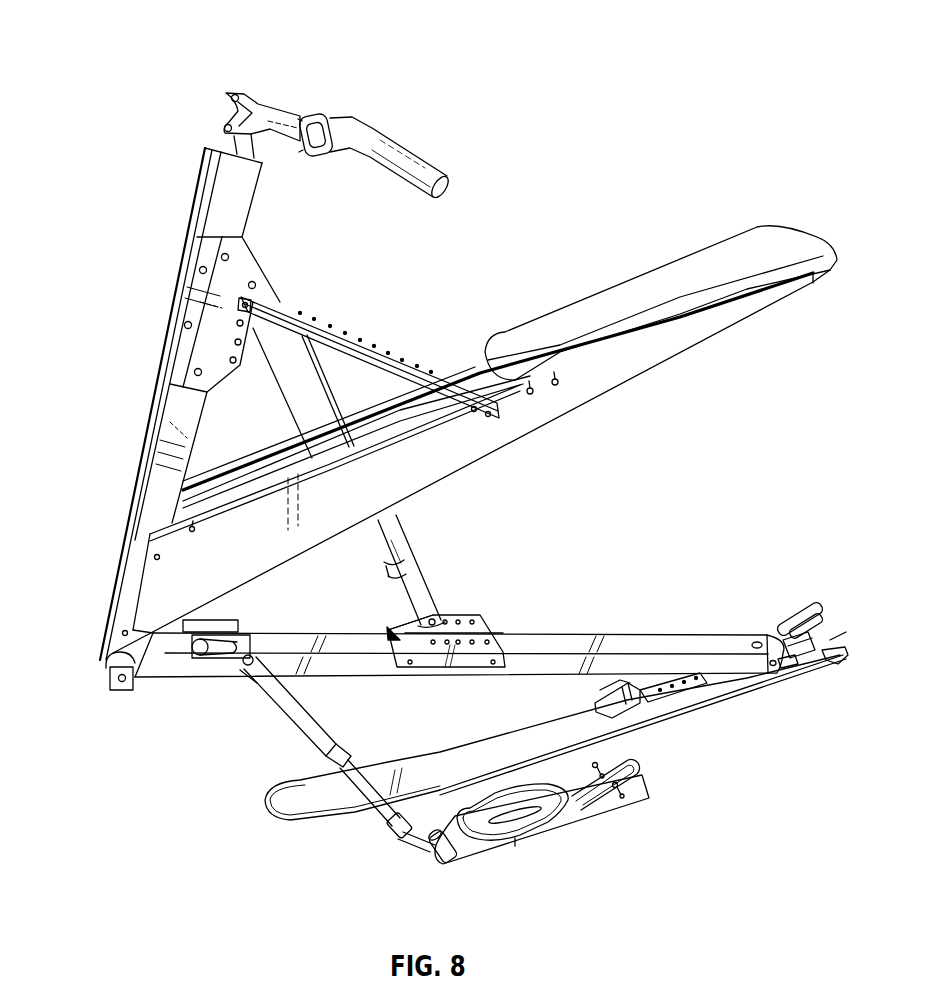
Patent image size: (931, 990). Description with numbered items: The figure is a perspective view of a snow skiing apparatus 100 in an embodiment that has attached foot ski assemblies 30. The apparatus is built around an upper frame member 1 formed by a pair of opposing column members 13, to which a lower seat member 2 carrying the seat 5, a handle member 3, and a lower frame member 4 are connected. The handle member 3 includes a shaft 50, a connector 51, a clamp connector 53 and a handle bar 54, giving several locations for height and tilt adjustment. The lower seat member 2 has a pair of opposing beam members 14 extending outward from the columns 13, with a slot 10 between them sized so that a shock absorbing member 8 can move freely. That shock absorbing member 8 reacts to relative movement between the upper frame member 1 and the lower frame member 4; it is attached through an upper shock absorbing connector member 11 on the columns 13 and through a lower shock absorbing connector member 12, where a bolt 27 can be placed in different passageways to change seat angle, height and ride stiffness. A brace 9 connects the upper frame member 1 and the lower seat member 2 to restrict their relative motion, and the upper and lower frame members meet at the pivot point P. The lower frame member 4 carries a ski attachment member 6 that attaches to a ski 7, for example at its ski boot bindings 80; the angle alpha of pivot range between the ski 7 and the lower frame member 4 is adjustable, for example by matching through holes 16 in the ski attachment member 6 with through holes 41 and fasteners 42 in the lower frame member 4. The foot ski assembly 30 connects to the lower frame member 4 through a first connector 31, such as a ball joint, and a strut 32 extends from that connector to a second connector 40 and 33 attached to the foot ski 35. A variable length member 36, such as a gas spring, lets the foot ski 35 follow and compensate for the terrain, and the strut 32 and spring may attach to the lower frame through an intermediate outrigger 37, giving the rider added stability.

The snow skiing apparatus 100 is at (441, 466).
The upper frame member 1 is at (199, 362).
The lower seat member 2 is at (742, 326).
The handle member 3 is at (375, 122).
The lower frame member 4 is at (459, 621).
The seat 5 is at (661, 276).
The ski attachment member 6 is at (643, 725).
The ski 7 is at (552, 737).
The shock absorbing member 8 is at (349, 441).
The brace 9 is at (368, 347).
The slot 10 is at (463, 463).
The upper shock absorbing connector member 11 is at (190, 314).
The lower shock absorbing connector member 12 is at (452, 605).
The column member 13 is at (136, 534).
The beam member 14 is at (492, 421).
The through holes 16 is at (666, 714).
The bolt 27 is at (451, 599).
The foot ski assembly 30 is at (545, 822).
The first connector 31 is at (228, 623).
The strut 32 is at (234, 697).
The second connector 33 is at (406, 860).
The foot ski 35 is at (519, 851).
The variable length member 36 is at (339, 754).
The outrigger 37 is at (193, 680).
The second connector 40 is at (374, 838).
The through holes 41 is at (765, 622).
The fasteners 42 is at (819, 678).
The shaft 50 is at (202, 131).
The connector 51 is at (232, 103).
The clamp connector 53 is at (328, 102).
The handle bar 54 is at (391, 146).
The ski boot bindings 80 is at (813, 612).
The pivot point P is at (92, 664).
The angle of pivot range alpha is at (552, 705).